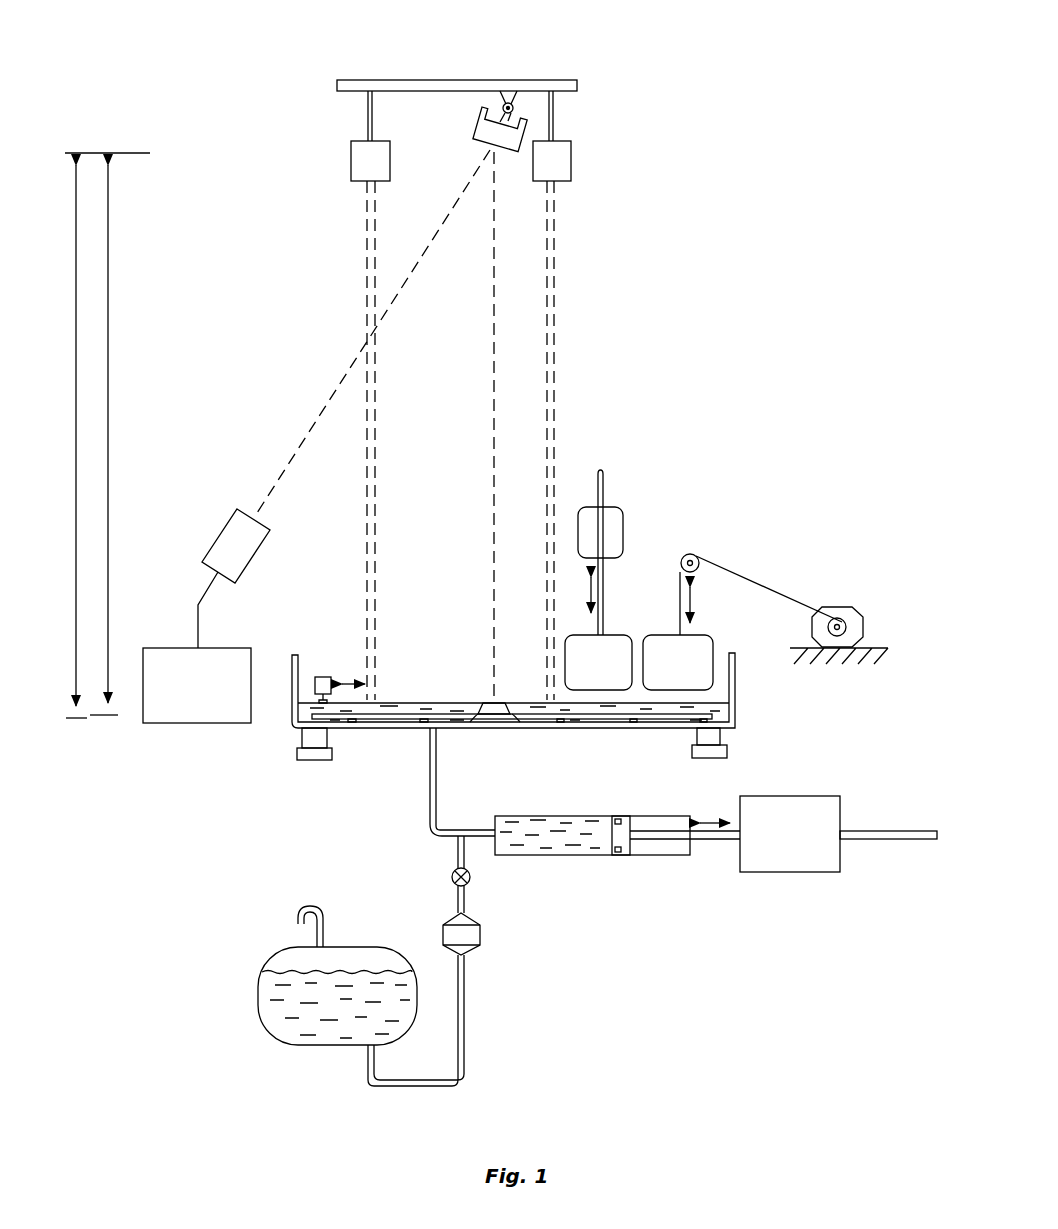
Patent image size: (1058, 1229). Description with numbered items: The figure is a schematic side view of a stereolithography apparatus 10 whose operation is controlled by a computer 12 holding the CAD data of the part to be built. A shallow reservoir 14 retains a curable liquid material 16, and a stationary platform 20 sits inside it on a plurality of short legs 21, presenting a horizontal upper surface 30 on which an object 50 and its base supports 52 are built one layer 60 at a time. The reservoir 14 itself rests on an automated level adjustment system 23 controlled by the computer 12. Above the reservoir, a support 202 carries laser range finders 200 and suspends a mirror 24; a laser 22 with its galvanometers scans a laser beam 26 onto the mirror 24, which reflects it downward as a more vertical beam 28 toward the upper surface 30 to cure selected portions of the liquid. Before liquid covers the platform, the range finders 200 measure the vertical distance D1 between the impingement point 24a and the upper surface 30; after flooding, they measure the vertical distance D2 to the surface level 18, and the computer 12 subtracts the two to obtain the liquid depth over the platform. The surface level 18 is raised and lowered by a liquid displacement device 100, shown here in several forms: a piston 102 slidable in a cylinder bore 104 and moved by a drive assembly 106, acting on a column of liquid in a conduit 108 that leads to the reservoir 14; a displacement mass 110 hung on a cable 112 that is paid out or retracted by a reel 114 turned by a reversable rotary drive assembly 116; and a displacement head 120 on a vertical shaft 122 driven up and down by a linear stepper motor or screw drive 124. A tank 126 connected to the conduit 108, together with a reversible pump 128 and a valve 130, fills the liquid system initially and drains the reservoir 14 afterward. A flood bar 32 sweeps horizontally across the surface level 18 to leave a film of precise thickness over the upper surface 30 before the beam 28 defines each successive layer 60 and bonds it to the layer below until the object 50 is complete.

The apparatus 10 is at (674, 318).
The computer 12 is at (165, 728).
The reservoir 14 is at (735, 683).
The curable liquid material 16 is at (729, 705).
The surface level 18 is at (400, 720).
The stationary platform 20 is at (700, 722).
The short legs 21 is at (352, 730).
The laser 22 is at (258, 540).
The automated level adjustment system 23 is at (302, 740).
The mirror 24 is at (515, 135).
The impingement point 24a is at (127, 152).
The laser beam 26 is at (333, 398).
The beam 28 is at (494, 495).
The upper surface 30 is at (665, 712).
The flood bar 32 is at (323, 675).
The object 50 is at (512, 725).
The base support 52 is at (500, 722).
The layer 60 is at (490, 704).
The vertical distance D1 is at (73, 441).
The vertical distance D2 is at (106, 440).
The liquid displacement device 100 is at (652, 908).
The piston 102 is at (635, 818).
The cylinder bore 104 is at (535, 848).
The drive assembly 106 is at (765, 868).
The conduit 108 is at (430, 798).
The displacement mass 110 is at (700, 642).
The cable 112 is at (750, 573).
The reel 114 is at (848, 630).
The reversable rotary drive assembly 116 is at (848, 605).
The displacement head 120 is at (605, 630).
The vertical shaft 122 is at (603, 590).
The linear stepper motor or screw drive 124 is at (618, 520).
The tank 126 is at (256, 988).
The reversible pump 128 is at (480, 940).
The valve 130 is at (452, 880).
The laser range finder 200 is at (357, 150).
The support 202 is at (509, 88).